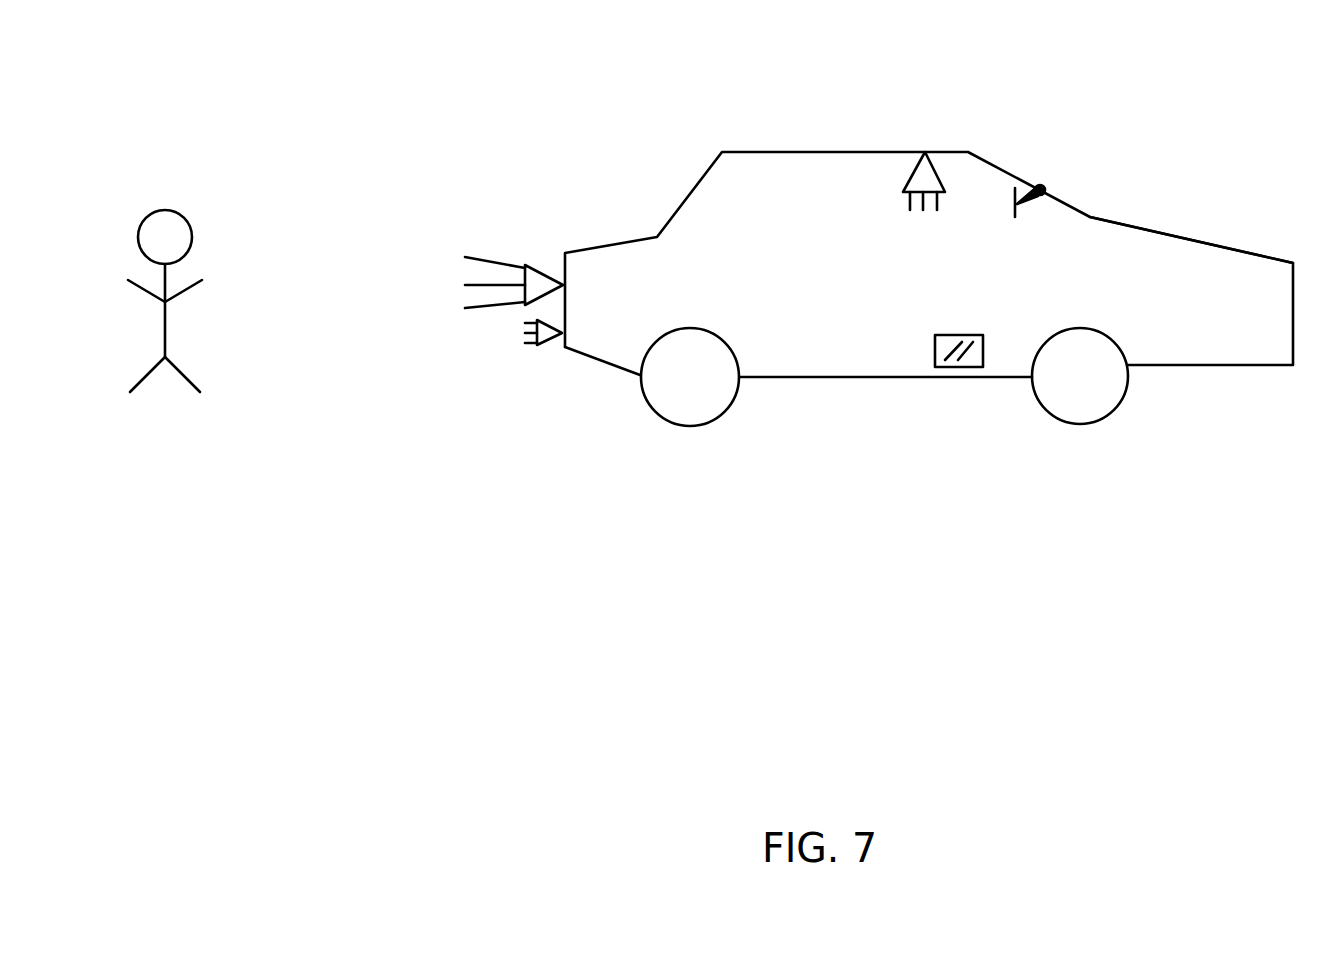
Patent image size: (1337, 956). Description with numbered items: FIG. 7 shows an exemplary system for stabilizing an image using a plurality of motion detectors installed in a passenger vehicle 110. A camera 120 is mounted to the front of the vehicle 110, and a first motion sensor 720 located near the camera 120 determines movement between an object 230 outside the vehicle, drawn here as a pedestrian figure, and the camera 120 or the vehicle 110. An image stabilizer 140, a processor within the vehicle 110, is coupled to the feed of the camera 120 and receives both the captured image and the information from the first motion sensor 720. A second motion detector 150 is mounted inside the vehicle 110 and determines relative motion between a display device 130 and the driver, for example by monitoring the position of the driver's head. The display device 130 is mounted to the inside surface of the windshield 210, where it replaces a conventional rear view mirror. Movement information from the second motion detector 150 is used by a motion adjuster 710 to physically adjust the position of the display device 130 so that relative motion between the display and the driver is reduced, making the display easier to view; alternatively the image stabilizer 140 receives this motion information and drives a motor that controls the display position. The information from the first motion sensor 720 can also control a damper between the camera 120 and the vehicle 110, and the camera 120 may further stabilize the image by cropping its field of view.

The passenger vehicle 110 is at (788, 377).
The camera 120 is at (540, 268).
The display device 130 is at (1033, 187).
The image stabilizer 140 is at (958, 333).
The motion detector 150 is at (923, 162).
The windshield 210 is at (1080, 207).
The object 230 is at (167, 208).
The motion adjuster 710 is at (1045, 188).
The first motion sensor 720 is at (545, 345).